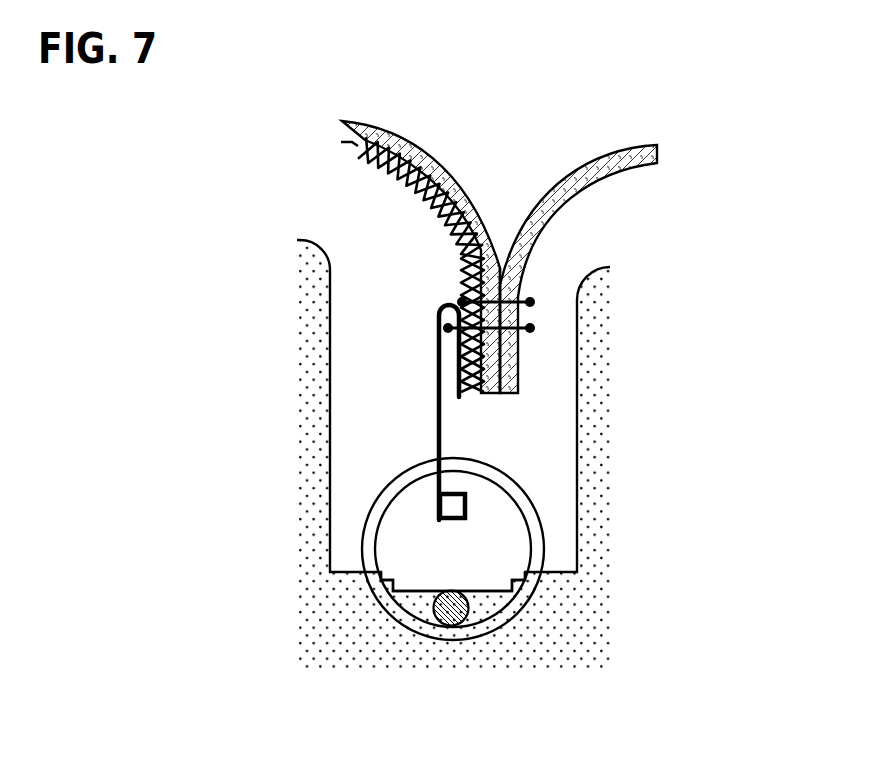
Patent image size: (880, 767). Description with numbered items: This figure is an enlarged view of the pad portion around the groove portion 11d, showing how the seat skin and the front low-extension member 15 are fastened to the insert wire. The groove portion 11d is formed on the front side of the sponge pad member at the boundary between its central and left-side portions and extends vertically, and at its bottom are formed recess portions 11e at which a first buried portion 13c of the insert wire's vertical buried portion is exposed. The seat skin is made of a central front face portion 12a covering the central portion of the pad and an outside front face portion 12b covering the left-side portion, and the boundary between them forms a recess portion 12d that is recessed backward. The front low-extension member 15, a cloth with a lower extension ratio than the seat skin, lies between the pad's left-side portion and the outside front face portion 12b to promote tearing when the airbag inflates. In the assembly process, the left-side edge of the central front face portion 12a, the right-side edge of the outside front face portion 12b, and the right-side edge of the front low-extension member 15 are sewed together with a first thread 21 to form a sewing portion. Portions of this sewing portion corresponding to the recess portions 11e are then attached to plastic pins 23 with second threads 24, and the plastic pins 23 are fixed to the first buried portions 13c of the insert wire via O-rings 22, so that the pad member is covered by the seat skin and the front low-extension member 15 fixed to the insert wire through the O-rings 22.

The groove portion 11d is at (330, 430).
The recess portions 11e is at (377, 585).
The central front face portion 12a is at (620, 157).
The outside front face portion 12b is at (363, 127).
The recess portion 12d is at (501, 280).
The first buried portion 13c is at (430, 608).
The front low-extension member 15 is at (343, 143).
The first thread 21 is at (518, 300).
The O-rings 22 is at (510, 473).
The plastic pins 23 is at (437, 385).
The second threads 24 is at (530, 335).